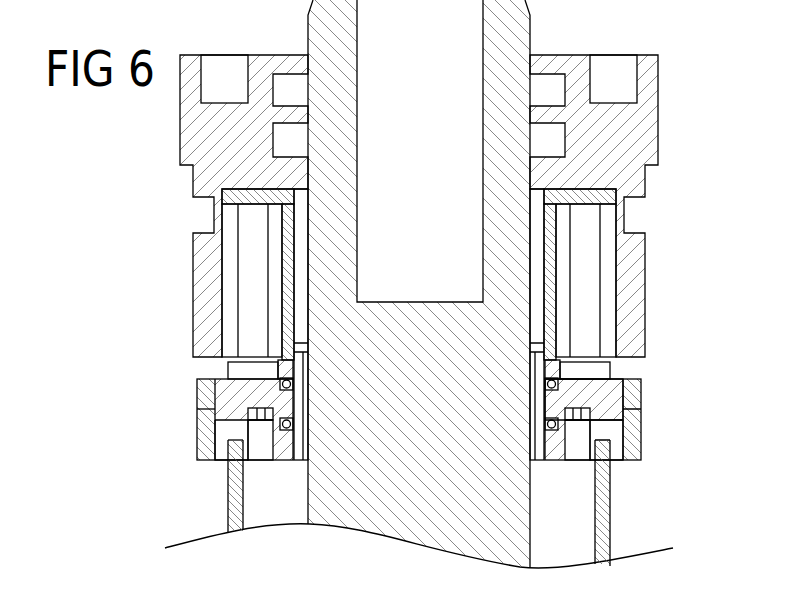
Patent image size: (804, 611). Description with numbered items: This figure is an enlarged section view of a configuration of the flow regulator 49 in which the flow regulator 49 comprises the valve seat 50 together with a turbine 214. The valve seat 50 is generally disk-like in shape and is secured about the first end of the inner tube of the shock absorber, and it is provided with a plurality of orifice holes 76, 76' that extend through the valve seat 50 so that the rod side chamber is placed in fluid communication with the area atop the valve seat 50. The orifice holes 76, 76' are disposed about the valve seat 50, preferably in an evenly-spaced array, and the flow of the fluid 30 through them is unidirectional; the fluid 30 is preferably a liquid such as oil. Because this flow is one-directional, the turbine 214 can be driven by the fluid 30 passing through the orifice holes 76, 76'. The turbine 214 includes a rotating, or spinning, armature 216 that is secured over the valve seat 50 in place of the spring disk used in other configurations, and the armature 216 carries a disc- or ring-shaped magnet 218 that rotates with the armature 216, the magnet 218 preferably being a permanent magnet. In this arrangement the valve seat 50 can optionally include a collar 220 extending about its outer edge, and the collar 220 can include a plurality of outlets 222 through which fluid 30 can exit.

The fluid 30 is at (288, 502).
The flow regulator 49 is at (145, 432).
The valve seat 50 is at (233, 428).
The orifice hole 76 is at (209, 477).
The orifice hole 76' is at (637, 493).
The turbine 214 is at (152, 361).
The armature 216 is at (605, 392).
The magnet 218 is at (587, 370).
The collar 220 is at (632, 410).
The outlet 222 is at (205, 407).